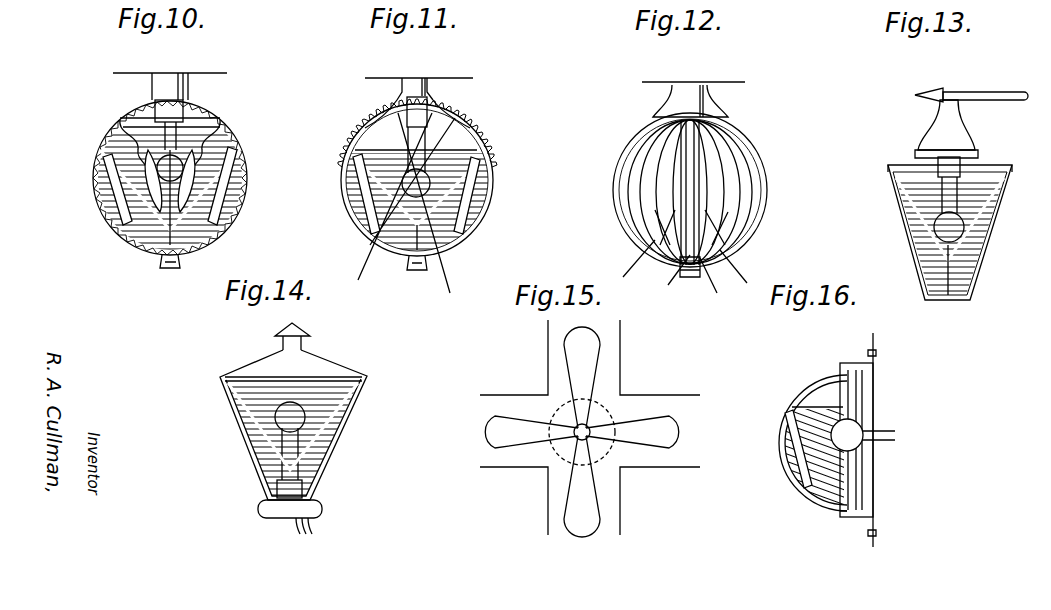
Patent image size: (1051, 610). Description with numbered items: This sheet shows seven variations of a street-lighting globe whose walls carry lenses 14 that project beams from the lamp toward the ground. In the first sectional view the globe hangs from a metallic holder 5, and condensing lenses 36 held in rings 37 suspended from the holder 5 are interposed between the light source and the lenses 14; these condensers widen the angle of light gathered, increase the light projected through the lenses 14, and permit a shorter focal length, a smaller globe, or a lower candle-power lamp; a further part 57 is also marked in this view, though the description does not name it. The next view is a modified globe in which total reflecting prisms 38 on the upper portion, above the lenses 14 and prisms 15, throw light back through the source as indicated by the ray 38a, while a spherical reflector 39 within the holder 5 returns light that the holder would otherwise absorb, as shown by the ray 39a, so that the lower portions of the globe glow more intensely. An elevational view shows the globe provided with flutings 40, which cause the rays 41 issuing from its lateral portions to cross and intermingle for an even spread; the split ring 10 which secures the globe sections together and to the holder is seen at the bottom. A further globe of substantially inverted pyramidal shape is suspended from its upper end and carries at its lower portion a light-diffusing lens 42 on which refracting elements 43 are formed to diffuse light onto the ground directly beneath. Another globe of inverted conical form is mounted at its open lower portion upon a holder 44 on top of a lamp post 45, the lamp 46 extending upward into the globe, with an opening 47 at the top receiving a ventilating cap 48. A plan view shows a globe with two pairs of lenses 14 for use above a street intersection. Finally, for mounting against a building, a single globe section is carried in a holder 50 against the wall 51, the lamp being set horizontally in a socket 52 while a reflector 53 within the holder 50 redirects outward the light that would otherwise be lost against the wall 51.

In FIG. 10, the metallic holder 5 is at (213, 121).
In FIG. 11, the metallic holder 5 is at (433, 96).
In FIG. 12, the metallic holder 5 is at (706, 100).
In FIG. 12, the split ring 10 is at (680, 270).
In FIG. 10, the lenses 14 is at (246, 192).
In FIG. 11, the lenses 14 is at (494, 170).
In FIG. 15, the lenses 14 is at (513, 470).
In FIG. 16, the lenses 14 is at (800, 433).
In FIG. 11, the prisms 15 is at (448, 160).
In FIG. 16, the prisms 15 is at (797, 410).
In FIG. 10, the condensing lenses 36 is at (230, 205).
In FIG. 10, the rings 37 is at (190, 145).
In FIG. 11, the total reflecting prisms 38 is at (447, 123).
In FIG. 11, the ray 38a is at (447, 137).
In FIG. 11, the reflector 39 is at (397, 103).
In FIG. 11, the ray 39a is at (440, 262).
In FIG. 12, the flutings 40 is at (722, 138).
In FIG. 12, the rays 41 is at (730, 262).
In FIG. 13, the light-diffusing lens 42 is at (972, 294).
In FIG. 13, the refracting elements 43 is at (948, 300).
In FIG. 14, the holder 44 is at (265, 507).
In FIG. 14, the lamp post 45 is at (280, 528).
In FIG. 14, the lamp 46 is at (285, 437).
In FIG. 14, the opening 47 is at (290, 378).
In FIG. 14, the ventilating cap 48 is at (288, 326).
In FIG. 16, the holder 50 is at (848, 517).
In FIG. 16, the wall 51 is at (873, 333).
In FIG. 16, the socket 52 is at (877, 433).
In FIG. 16, the reflector 53 is at (857, 377).
In FIG. 10, the reflector rib 57 is at (180, 237).